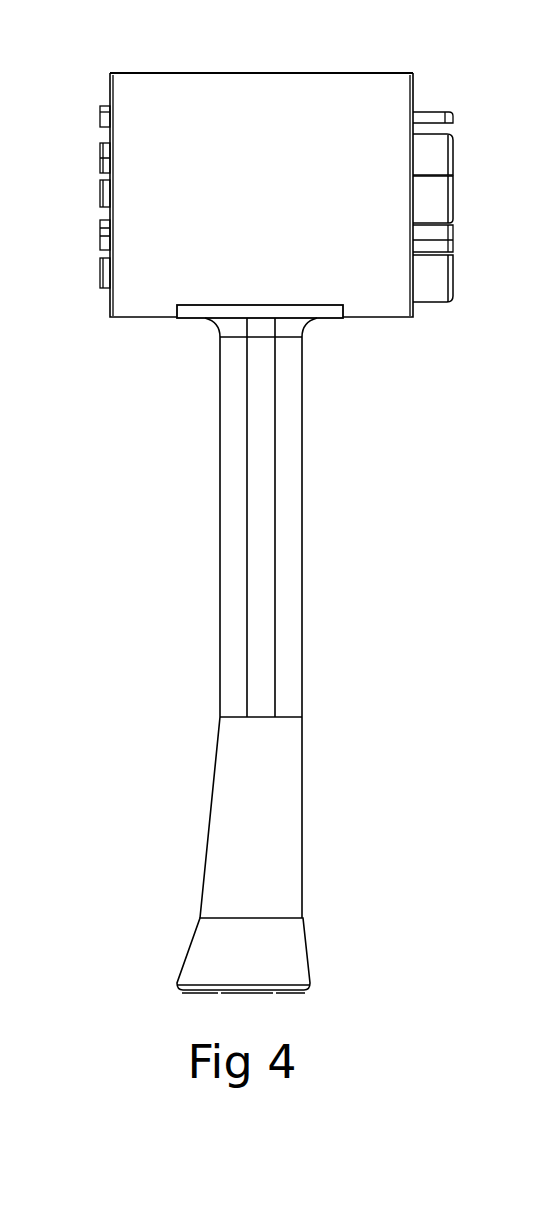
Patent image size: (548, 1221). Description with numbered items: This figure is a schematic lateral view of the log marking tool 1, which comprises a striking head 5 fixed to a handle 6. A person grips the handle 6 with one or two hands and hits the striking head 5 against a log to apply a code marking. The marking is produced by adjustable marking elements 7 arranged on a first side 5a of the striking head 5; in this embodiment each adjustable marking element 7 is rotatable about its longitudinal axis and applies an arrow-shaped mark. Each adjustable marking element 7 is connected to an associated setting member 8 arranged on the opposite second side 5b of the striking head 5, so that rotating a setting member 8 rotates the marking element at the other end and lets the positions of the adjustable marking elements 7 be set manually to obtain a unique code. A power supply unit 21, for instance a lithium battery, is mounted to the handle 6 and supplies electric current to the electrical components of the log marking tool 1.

The log marking tool 1 is at (165, 422).
The striking head 5 is at (146, 305).
The first side of the striking head 5a is at (103, 301).
The second side of the striking head 5b is at (419, 309).
The handle 6 is at (292, 558).
The adjustable marking element 7 is at (101, 157).
The setting member 8 is at (442, 158).
The power supply unit 21 is at (295, 957).